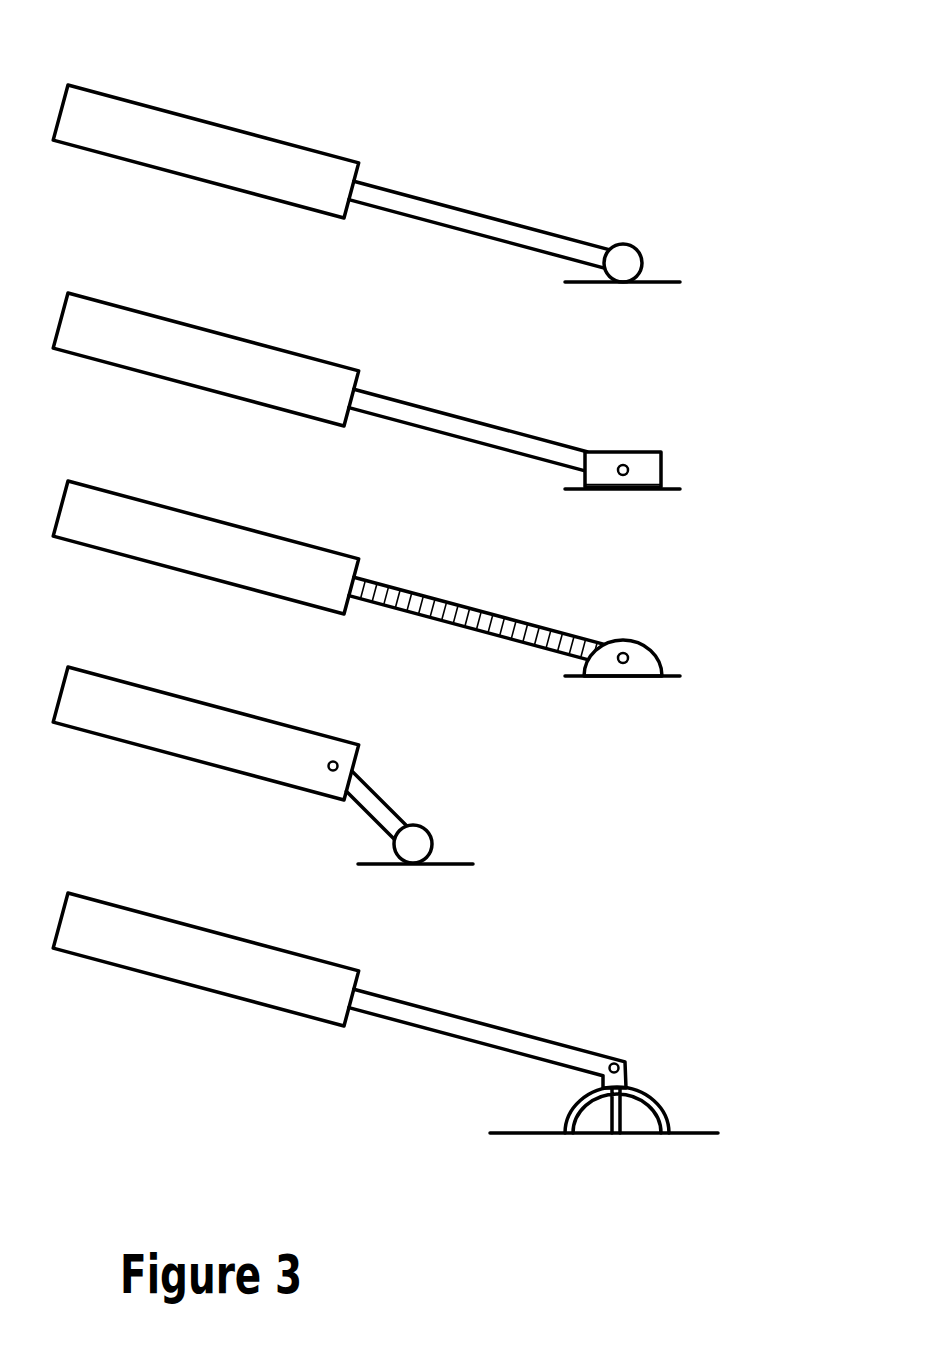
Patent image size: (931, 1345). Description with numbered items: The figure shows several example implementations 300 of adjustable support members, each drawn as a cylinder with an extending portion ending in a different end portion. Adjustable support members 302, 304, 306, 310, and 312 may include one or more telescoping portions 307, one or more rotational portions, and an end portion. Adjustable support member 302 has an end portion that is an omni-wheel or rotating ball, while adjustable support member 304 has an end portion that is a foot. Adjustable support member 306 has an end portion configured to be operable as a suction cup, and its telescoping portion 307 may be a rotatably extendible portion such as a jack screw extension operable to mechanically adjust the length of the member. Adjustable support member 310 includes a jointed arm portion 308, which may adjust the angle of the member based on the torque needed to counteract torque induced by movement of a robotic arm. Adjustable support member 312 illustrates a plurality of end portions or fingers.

The example implementations 300 is at (785, 89).
The adjustable support member 302 is at (639, 245).
The adjustable support member 304 is at (636, 450).
The adjustable support member 306 is at (628, 640).
The telescoping portion 307 is at (420, 592).
The jointed arm portion 308 is at (382, 792).
The adjustable support member 310 is at (427, 832).
The adjustable support member 312 is at (642, 1088).